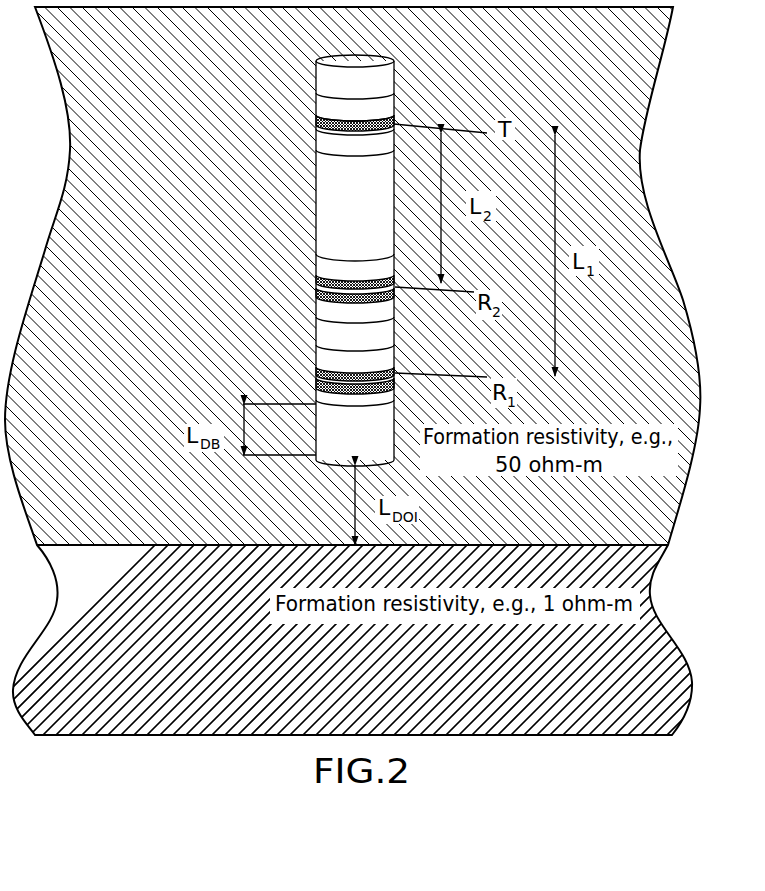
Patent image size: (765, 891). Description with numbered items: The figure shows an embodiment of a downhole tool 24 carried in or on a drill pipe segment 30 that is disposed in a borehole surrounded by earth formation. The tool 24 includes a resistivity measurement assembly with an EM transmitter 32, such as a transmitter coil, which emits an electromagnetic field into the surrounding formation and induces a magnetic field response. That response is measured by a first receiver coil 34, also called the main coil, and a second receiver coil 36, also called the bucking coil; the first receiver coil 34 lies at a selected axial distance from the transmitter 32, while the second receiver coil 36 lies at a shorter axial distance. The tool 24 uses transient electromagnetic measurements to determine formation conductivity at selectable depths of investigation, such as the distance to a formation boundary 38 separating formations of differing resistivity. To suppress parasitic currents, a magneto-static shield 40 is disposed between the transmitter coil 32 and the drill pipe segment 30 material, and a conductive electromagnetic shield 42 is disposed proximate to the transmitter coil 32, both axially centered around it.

The downhole tool 24 is at (403, 77).
The drill pipe segment 30 is at (318, 218).
The EM transmitter 32 is at (397, 126).
The first receiver coil 34 is at (316, 374).
The second receiver coil 36 is at (316, 286).
The formation boundary 38 is at (172, 543).
The magneto-static shield 40 is at (317, 115).
The conductive electromagnetic shield 42 is at (325, 150).